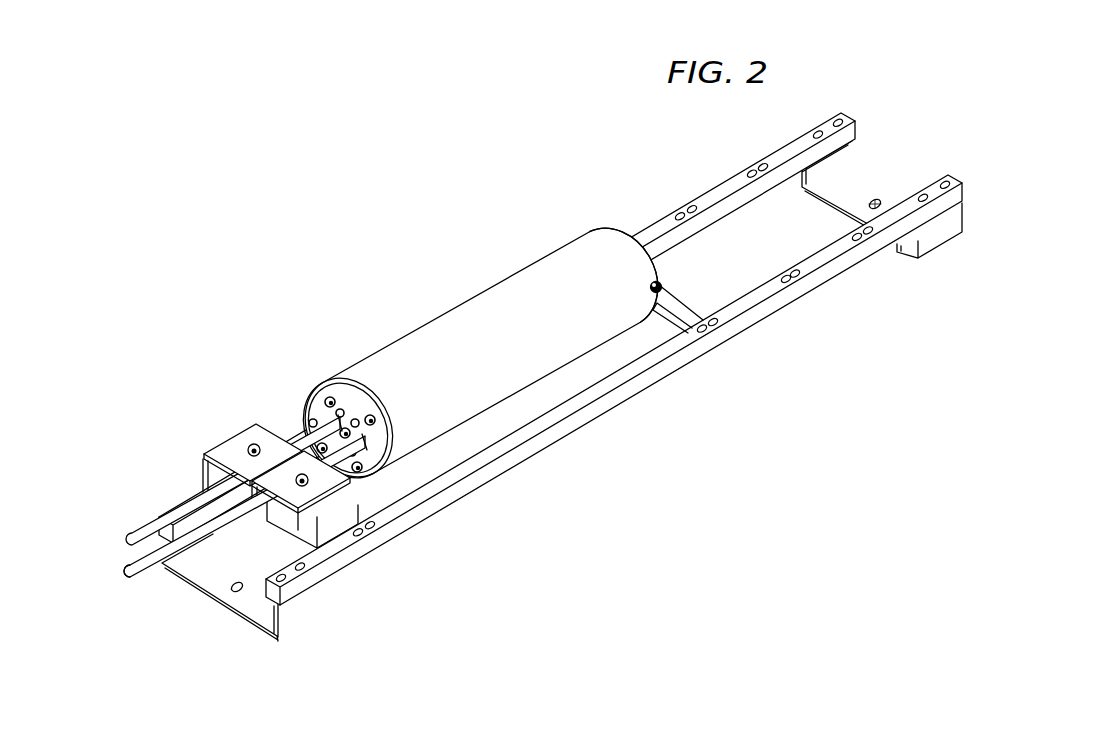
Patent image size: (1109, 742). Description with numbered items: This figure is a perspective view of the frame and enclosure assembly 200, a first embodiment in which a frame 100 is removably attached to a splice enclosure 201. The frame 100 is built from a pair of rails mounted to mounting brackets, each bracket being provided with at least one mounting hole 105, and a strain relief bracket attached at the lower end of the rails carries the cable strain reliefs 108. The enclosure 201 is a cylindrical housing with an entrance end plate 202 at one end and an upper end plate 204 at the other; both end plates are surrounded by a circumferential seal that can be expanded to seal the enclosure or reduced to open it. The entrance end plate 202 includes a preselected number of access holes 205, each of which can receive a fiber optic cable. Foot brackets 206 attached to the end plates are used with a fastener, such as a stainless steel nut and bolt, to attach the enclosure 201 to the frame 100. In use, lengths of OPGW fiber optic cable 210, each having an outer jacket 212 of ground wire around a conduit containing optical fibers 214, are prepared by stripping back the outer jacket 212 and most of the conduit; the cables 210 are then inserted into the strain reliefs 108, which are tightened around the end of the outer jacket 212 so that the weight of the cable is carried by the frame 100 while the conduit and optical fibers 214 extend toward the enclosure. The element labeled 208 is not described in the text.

The frame 100 is at (722, 167).
The mounting hole 105 is at (878, 199).
The cable strain relief 108 is at (288, 495).
The frame and enclosure assembly 200 is at (376, 422).
The enclosure 201 is at (415, 325).
The entrance end plate 202 is at (350, 392).
The upper end plate 204 is at (615, 231).
The access hole 205 is at (393, 457).
The foot bracket 206 is at (674, 283).
The terminal 208 is at (310, 416).
The OPGW fiber optic cable 210 is at (142, 522).
The outer jacket 212 is at (140, 565).
The optical fibers 214 is at (127, 583).